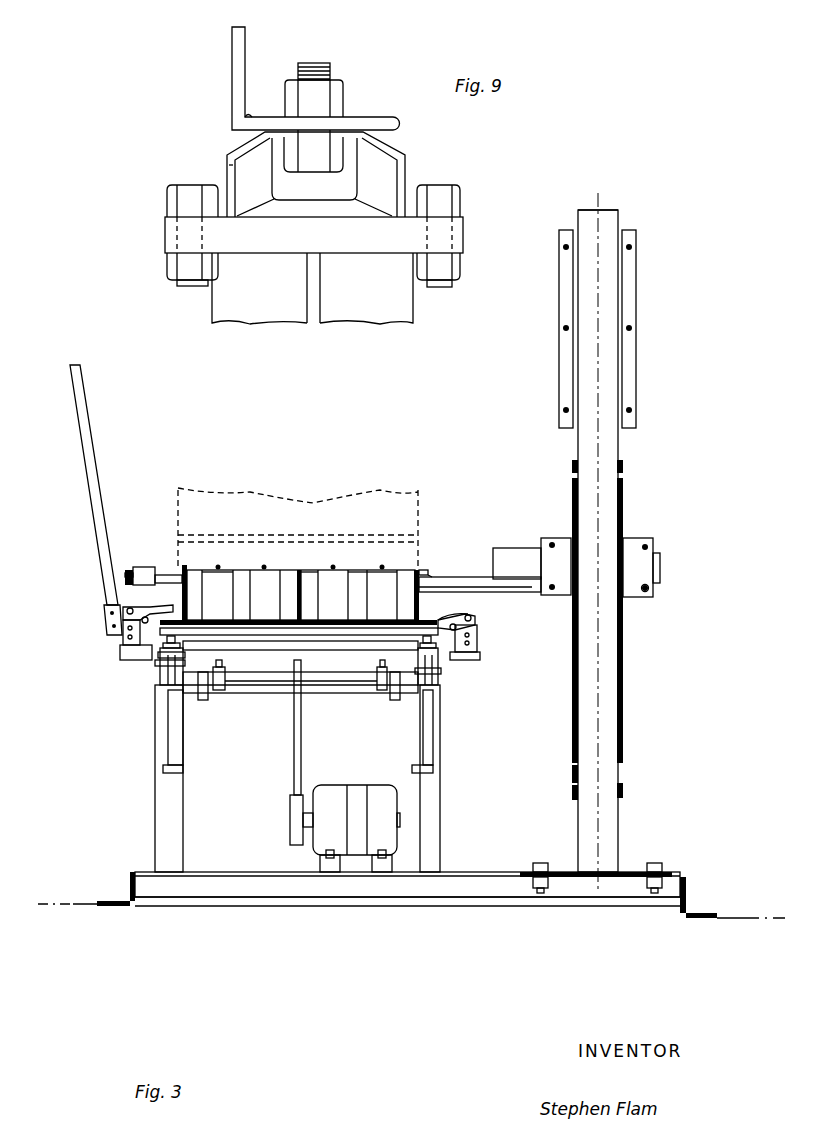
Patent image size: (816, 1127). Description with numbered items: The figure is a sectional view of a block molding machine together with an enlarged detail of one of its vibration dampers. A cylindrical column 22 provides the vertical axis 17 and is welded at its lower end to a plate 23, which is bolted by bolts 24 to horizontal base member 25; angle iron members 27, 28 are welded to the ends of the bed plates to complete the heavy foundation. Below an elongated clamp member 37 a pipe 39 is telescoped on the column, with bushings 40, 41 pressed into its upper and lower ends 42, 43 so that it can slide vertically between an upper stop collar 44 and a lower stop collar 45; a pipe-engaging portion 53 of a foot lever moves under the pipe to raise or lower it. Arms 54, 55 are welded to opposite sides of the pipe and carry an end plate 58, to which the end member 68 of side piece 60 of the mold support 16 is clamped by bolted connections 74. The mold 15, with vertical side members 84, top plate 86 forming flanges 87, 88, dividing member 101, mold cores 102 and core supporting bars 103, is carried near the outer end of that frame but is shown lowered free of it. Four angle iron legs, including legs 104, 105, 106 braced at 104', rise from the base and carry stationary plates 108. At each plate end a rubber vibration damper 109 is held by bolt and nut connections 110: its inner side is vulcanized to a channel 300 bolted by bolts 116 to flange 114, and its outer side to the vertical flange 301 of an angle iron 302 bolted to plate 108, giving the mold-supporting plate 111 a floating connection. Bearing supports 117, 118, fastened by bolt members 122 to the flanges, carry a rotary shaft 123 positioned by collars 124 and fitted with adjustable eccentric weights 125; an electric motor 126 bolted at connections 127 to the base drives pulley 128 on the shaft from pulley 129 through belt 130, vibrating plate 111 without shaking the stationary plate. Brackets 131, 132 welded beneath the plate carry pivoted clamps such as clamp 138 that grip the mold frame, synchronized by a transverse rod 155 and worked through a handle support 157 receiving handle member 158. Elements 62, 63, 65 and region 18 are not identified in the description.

In FIG. 9, the flange 114 is at (370, 117).
In FIG. 9, the bolts 116 is at (310, 63).
In FIG. 9, the rubber vibration damper 109 is at (385, 155).
In FIG. 9, the channel 300 is at (275, 177).
In FIG. 9, the vertical flange 301 is at (223, 163).
In FIG. 3, the vertical flange 301 is at (183, 652).
In FIG. 9, the angle iron 302 is at (167, 215).
In FIG. 9, the metal plate 108 is at (167, 233).
In FIG. 3, the metal plate 108 is at (155, 662).
In FIG. 9, the bolt and nut connections 110 is at (168, 258).
In FIG. 9, the angle iron leg 105 is at (217, 303).
In FIG. 3, the axis 17 is at (600, 198).
In FIG. 3, the column 22 is at (612, 298).
In FIG. 3, the clamp member 37 is at (630, 370).
In FIG. 3, the upper stop collar 44 is at (623, 465).
In FIG. 3, the upper end of pipe 42 is at (573, 492).
In FIG. 3, the bushing 40 is at (625, 487).
In FIG. 3, the pipe 39 is at (624, 510).
In FIG. 3, the bushing 41 is at (622, 752).
In FIG. 3, the lower end of pipe 43 is at (573, 752).
In FIG. 3, the pipe-engaging and actuating portion 53 is at (573, 775).
In FIG. 3, the lower stop collar 45 is at (573, 790).
In FIG. 3, the arm 54 is at (570, 538).
In FIG. 3, the end member 68 is at (518, 555).
In FIG. 3, the mold support 16 is at (489, 570).
In FIG. 3, the arm 55 is at (628, 548).
In FIG. 3, the end plate 58 is at (660, 568).
In FIG. 3, the bolted connections 74 is at (654, 590).
In FIG. 3, the plate 23 is at (625, 872).
In FIG. 3, the bolts 24 is at (665, 866).
In FIG. 3, the angle iron member 28 is at (130, 875).
In FIG. 3, the base member 25 is at (505, 872).
In FIG. 3, the angle iron member 27 is at (688, 893).
In FIG. 3, the angle iron leg 104 is at (141, 778).
In FIG. 3, the angle iron leg 106 is at (438, 806).
In FIG. 3, the brace 104' is at (334, 731).
In FIG. 3, the mold-supporting plate 111 is at (330, 627).
In FIG. 3, the bolt members 122 is at (428, 645).
In FIG. 3, the rod 155 is at (283, 632).
In FIG. 3, the pulley 128 is at (305, 668).
In FIG. 3, the rotary shaft 123 is at (347, 681).
In FIG. 3, the bearing support 117 is at (167, 685).
In FIG. 3, the bearing support 118 is at (432, 687).
In FIG. 3, the collar 124 is at (192, 693).
In FIG. 3, the adjustable eccentric weight 125 is at (225, 684).
In FIG. 3, the belt 130 is at (295, 783).
In FIG. 3, the pulley 129 is at (290, 838).
In FIG. 3, the electric motor 126 is at (390, 842).
In FIG. 3, the bolted connections 127 is at (330, 873).
In FIG. 3, the supporting bracket 132 is at (477, 656).
In FIG. 3, the clamp 138 is at (470, 614).
In FIG. 3, the supporting bracket 131 is at (122, 652).
In FIG. 3, the handle support 157 is at (105, 614).
In FIG. 3, the handle member 158 is at (85, 423).
In FIG. 3, the block 63 is at (145, 567).
In FIG. 3, the nut 62 is at (135, 568).
In FIG. 3, the screw 65 is at (128, 568).
In FIG. 3, the vertical side member 84 is at (182, 597).
In FIG. 3, the flange 88 is at (177, 565).
In FIG. 3, the stack 18 is at (298, 529).
In FIG. 3, the mold 15 is at (288, 567).
In FIG. 3, the mold core supporting bar 103 is at (220, 567).
In FIG. 3, the top plate 86 is at (358, 570).
In FIG. 3, the mold core 102 is at (390, 573).
In FIG. 3, the dividing member 101 is at (303, 577).
In FIG. 3, the flange 87 is at (428, 570).
In FIG. 3, the side piece 60 is at (433, 572).